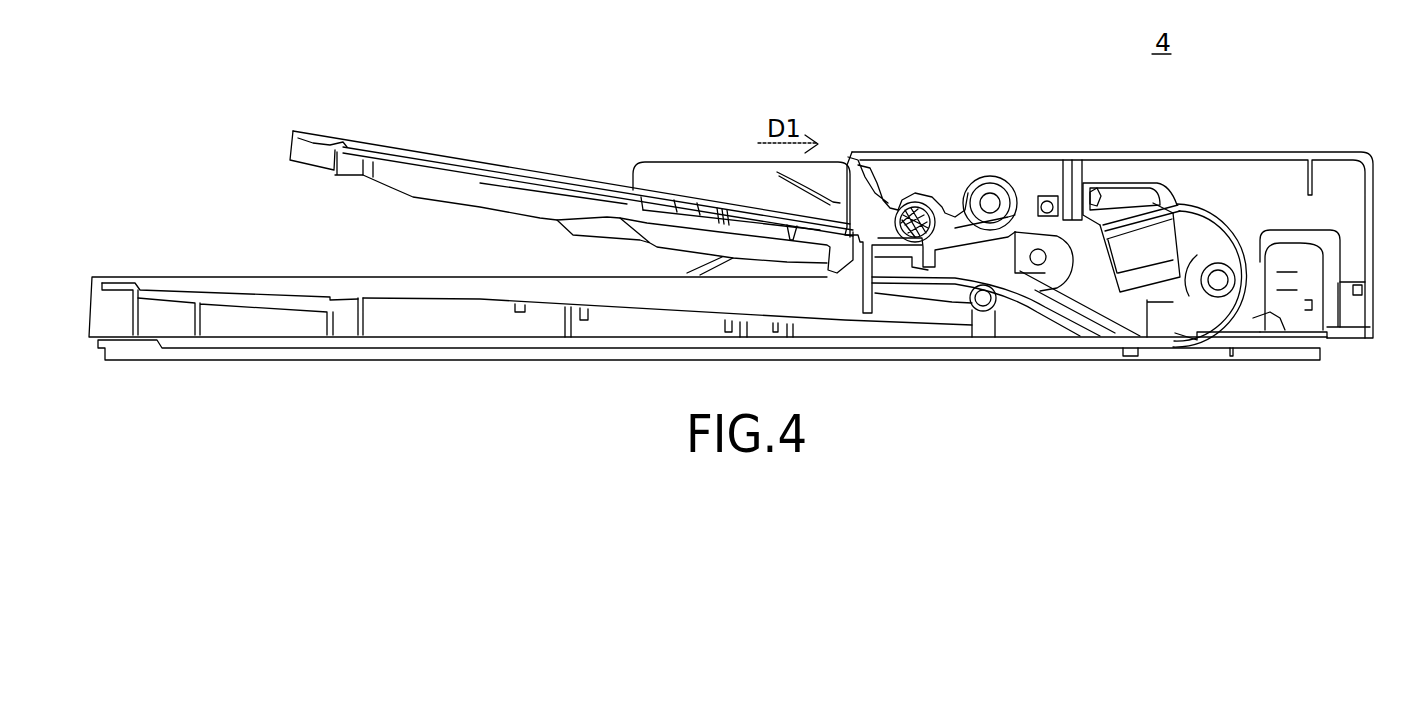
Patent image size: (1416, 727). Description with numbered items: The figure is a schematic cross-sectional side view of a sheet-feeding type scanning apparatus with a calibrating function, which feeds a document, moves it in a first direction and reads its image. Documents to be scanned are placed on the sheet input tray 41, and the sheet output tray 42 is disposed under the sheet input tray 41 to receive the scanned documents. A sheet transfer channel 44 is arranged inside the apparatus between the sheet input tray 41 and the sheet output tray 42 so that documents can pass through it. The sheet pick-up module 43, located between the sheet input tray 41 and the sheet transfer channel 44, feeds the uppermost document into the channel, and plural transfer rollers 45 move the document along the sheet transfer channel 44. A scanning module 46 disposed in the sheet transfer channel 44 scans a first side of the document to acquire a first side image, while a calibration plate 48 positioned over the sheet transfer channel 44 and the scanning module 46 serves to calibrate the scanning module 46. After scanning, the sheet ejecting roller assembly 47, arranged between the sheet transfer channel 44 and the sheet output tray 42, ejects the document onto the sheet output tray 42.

The sheet input tray 41 is at (510, 178).
The sheet output tray 42 is at (497, 295).
The sheet pick-up module 43 is at (988, 176).
The sheet transfer channel 44 is at (1056, 250).
The transfer rollers 45 is at (1045, 200).
The scanning module 46 is at (1133, 248).
The sheet ejecting roller assembly 47 is at (982, 298).
The calibration plate 48 is at (1128, 215).